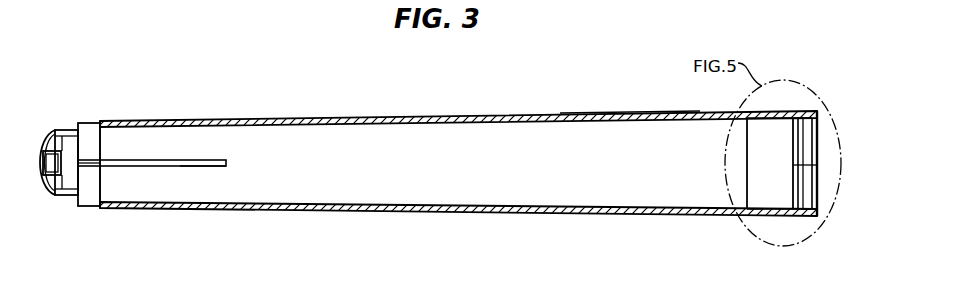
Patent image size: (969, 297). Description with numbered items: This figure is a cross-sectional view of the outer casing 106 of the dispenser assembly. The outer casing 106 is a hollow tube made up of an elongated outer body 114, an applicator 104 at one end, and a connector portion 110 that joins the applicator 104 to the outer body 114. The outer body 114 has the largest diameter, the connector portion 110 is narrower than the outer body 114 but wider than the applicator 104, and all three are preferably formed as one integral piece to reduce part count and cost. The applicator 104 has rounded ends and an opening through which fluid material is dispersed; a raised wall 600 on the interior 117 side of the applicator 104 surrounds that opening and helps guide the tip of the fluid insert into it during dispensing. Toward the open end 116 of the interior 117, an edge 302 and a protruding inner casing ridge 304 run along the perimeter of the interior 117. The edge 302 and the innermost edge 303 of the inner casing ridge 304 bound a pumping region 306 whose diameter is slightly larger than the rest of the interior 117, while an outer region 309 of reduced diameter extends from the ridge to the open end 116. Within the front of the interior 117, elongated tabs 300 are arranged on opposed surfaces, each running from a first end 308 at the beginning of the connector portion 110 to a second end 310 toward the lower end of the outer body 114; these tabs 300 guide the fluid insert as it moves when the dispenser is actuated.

The applicator 104 is at (66, 120).
The outer casing 106 is at (284, 96).
The connector portion 110 is at (83, 207).
The outer body 114 is at (515, 112).
The open end 116 is at (818, 147).
The interior 117 is at (637, 120).
The tabs 300 is at (163, 160).
The edge 302 is at (747, 150).
The innermost edge 303 is at (793, 148).
The inner casing ridge 304 is at (809, 108).
The pumping region 306 is at (748, 222).
The first end 308 is at (90, 152).
The outer region 309 is at (802, 222).
The second end 310 is at (227, 164).
The raised wall 600 is at (60, 196).